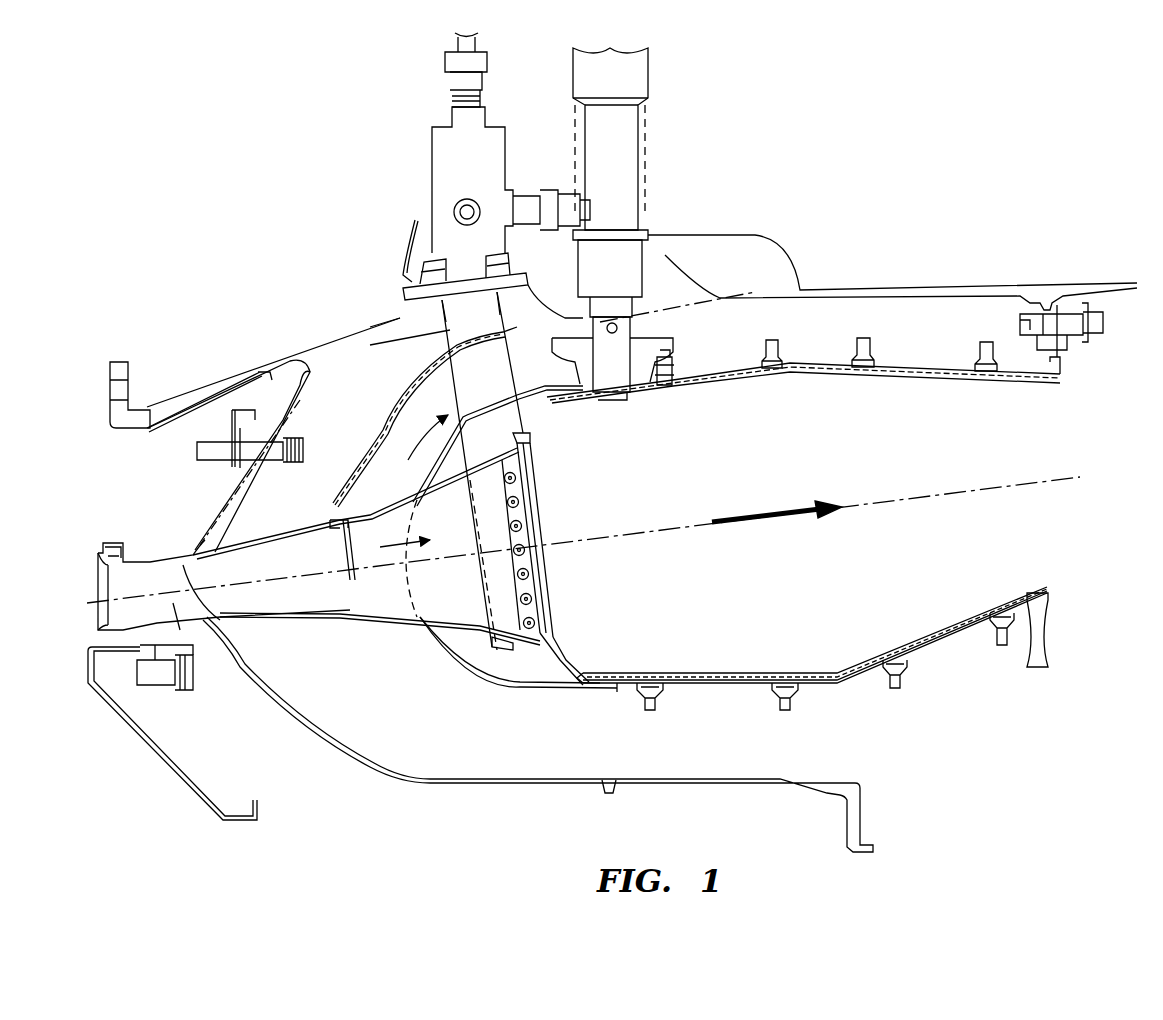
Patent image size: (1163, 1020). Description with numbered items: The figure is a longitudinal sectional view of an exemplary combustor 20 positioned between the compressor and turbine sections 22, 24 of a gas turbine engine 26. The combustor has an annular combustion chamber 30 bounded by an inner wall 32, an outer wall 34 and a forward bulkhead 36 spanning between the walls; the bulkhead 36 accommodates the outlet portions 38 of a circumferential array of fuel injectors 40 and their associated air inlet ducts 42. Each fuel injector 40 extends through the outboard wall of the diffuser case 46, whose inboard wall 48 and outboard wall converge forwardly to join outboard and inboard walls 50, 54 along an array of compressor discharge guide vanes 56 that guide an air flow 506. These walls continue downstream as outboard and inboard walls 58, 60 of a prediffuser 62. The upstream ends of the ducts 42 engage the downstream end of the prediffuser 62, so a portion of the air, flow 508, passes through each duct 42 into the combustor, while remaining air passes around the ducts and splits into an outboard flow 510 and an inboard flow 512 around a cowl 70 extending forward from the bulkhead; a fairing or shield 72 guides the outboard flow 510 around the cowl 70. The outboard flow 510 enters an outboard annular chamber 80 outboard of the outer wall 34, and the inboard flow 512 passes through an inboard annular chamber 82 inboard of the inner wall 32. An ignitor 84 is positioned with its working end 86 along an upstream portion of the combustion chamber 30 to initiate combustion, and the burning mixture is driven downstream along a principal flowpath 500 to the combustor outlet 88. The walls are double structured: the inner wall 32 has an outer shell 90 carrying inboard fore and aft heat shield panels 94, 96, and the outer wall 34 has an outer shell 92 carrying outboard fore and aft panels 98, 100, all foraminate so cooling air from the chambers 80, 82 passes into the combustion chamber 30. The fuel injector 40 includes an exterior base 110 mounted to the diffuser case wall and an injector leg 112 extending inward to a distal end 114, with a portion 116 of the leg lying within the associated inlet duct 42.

The combustor 20 is at (852, 330).
The compressor section 22 is at (62, 527).
The turbine section 24 is at (1137, 455).
The gas turbine engine 26 is at (1043, 222).
The combustion chamber 30 is at (856, 465).
The inner wall 32 is at (742, 700).
The outer wall 34 is at (915, 355).
The forward bulkhead 36 is at (548, 662).
The outlet portion 38 is at (528, 547).
The fuel injector 40 is at (422, 168).
The air inlet duct 42 is at (353, 600).
The diffuser case 46 is at (395, 312).
The inboard wall 48 is at (500, 785).
The outboard wall 50 is at (150, 560).
The inboard wall 54 is at (135, 640).
The compressor discharge guide vanes 56 is at (183, 672).
The outboard wall 58 is at (258, 548).
The inboard wall 60 is at (280, 622).
The prediffuser 62 is at (310, 615).
The cowl 70 is at (462, 676).
The fairing or shield 72 is at (378, 420).
The outboard annular chamber 80 is at (921, 328).
The inboard annular chamber 82 is at (685, 762).
The ignitor 84 is at (622, 322).
The working end 86 is at (618, 400).
The combustor outlet 88 is at (1042, 541).
The outer shell 90 is at (700, 690).
The outer shell 92 is at (700, 380).
The inboard fore panel 94 is at (730, 672).
The inboard aft panel 96 is at (930, 625).
The outboard fore panel 98 is at (730, 383).
The outboard aft panel 100 is at (910, 380).
The exterior base 110 is at (462, 240).
The injector leg 112 is at (487, 370).
The distal end 114 is at (520, 648).
The portion 116 is at (530, 580).
The principal flowpath 500 is at (777, 537).
The air flow 506 is at (215, 585).
The air flow 508 is at (418, 530).
The outboard flow 510 is at (415, 400).
The inboard flow 512 is at (495, 720).